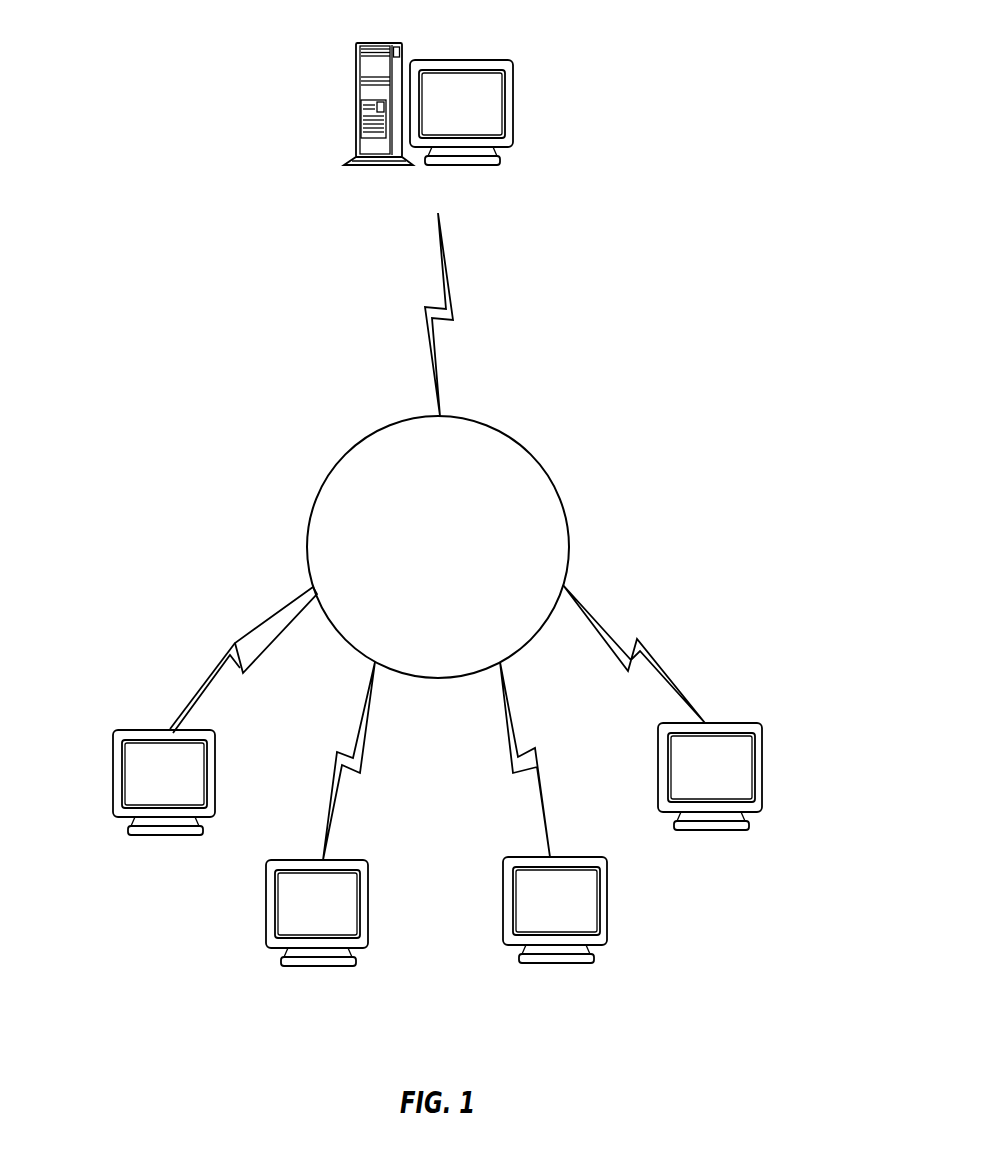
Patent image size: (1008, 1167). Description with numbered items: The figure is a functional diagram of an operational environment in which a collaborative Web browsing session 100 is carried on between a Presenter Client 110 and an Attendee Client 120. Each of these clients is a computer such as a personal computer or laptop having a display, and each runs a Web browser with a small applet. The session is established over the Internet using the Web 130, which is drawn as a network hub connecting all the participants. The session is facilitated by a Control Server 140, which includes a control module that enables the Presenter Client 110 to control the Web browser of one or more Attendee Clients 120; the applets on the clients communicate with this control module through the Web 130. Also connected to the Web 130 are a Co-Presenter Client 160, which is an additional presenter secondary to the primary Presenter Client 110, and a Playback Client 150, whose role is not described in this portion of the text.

The collaborative Web browsing session 100 is at (224, 372).
The Presenter Client 110 is at (130, 730).
The Attendee Client 120 is at (757, 723).
The Web 130 is at (467, 595).
The Control Server 140 is at (497, 60).
The playback client 150 is at (264, 927).
The Co-Presenter Client 160 is at (607, 920).